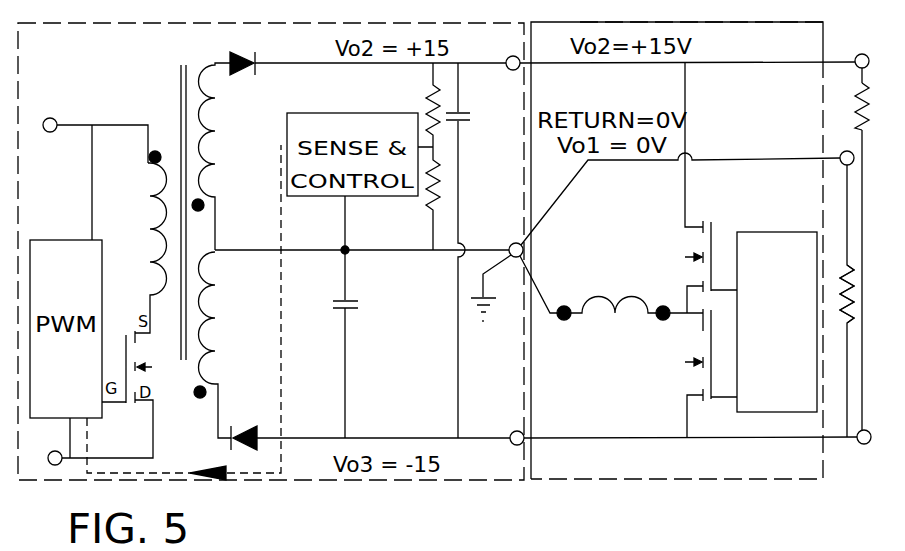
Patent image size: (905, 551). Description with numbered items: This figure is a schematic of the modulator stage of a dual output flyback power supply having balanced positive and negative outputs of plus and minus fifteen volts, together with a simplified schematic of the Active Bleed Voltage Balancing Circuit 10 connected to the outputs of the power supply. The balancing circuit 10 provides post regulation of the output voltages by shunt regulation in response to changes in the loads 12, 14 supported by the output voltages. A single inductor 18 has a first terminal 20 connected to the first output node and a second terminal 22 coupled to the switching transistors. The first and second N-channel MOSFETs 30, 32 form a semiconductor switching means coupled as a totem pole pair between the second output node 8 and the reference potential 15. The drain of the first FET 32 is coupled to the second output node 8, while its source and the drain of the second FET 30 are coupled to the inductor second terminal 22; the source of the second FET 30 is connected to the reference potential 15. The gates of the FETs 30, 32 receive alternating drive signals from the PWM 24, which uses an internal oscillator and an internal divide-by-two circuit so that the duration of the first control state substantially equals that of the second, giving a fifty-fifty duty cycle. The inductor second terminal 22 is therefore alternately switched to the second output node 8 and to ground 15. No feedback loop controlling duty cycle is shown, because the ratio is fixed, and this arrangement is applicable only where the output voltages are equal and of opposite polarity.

The second output node 8 is at (857, 55).
The Active Bleed Voltage Balancing Circuit 10 is at (620, 404).
The load 12 is at (840, 308).
The load 14 is at (860, 91).
The reference potential 15 is at (509, 246).
The inductor 18 is at (608, 292).
The first terminal 20 is at (569, 322).
The second terminal 22 is at (659, 322).
The PWM 24 is at (764, 279).
The second FET 30 is at (700, 343).
The first FET 32 is at (702, 250).